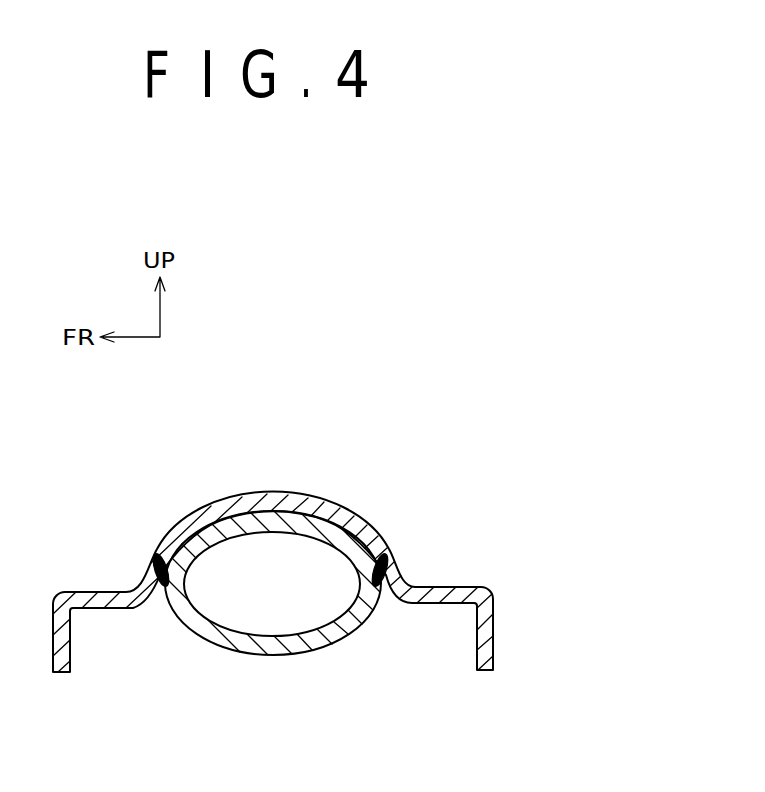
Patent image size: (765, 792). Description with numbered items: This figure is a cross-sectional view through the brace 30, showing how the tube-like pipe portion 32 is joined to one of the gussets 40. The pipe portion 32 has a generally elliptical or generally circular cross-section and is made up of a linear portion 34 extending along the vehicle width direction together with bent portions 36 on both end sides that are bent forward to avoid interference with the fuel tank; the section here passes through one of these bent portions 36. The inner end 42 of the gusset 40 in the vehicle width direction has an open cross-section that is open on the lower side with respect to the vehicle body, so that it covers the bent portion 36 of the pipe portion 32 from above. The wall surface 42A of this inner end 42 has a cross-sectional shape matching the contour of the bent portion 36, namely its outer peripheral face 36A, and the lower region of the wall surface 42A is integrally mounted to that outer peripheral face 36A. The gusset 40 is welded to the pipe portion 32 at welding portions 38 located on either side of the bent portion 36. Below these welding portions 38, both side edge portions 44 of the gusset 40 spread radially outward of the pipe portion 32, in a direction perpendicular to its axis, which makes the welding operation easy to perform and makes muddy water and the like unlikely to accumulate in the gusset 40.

The brace 30 is at (432, 449).
The pipe portion 32 is at (226, 662).
The linear portion 34 is at (306, 559).
The bent portion 36 is at (323, 653).
The outer peripheral face 36A is at (352, 525).
The welding portion 38 is at (157, 573).
The gusset 40 is at (276, 481).
The inner end 42 is at (320, 505).
The wall surface 42A is at (194, 530).
The side edge portion 44 is at (62, 677).